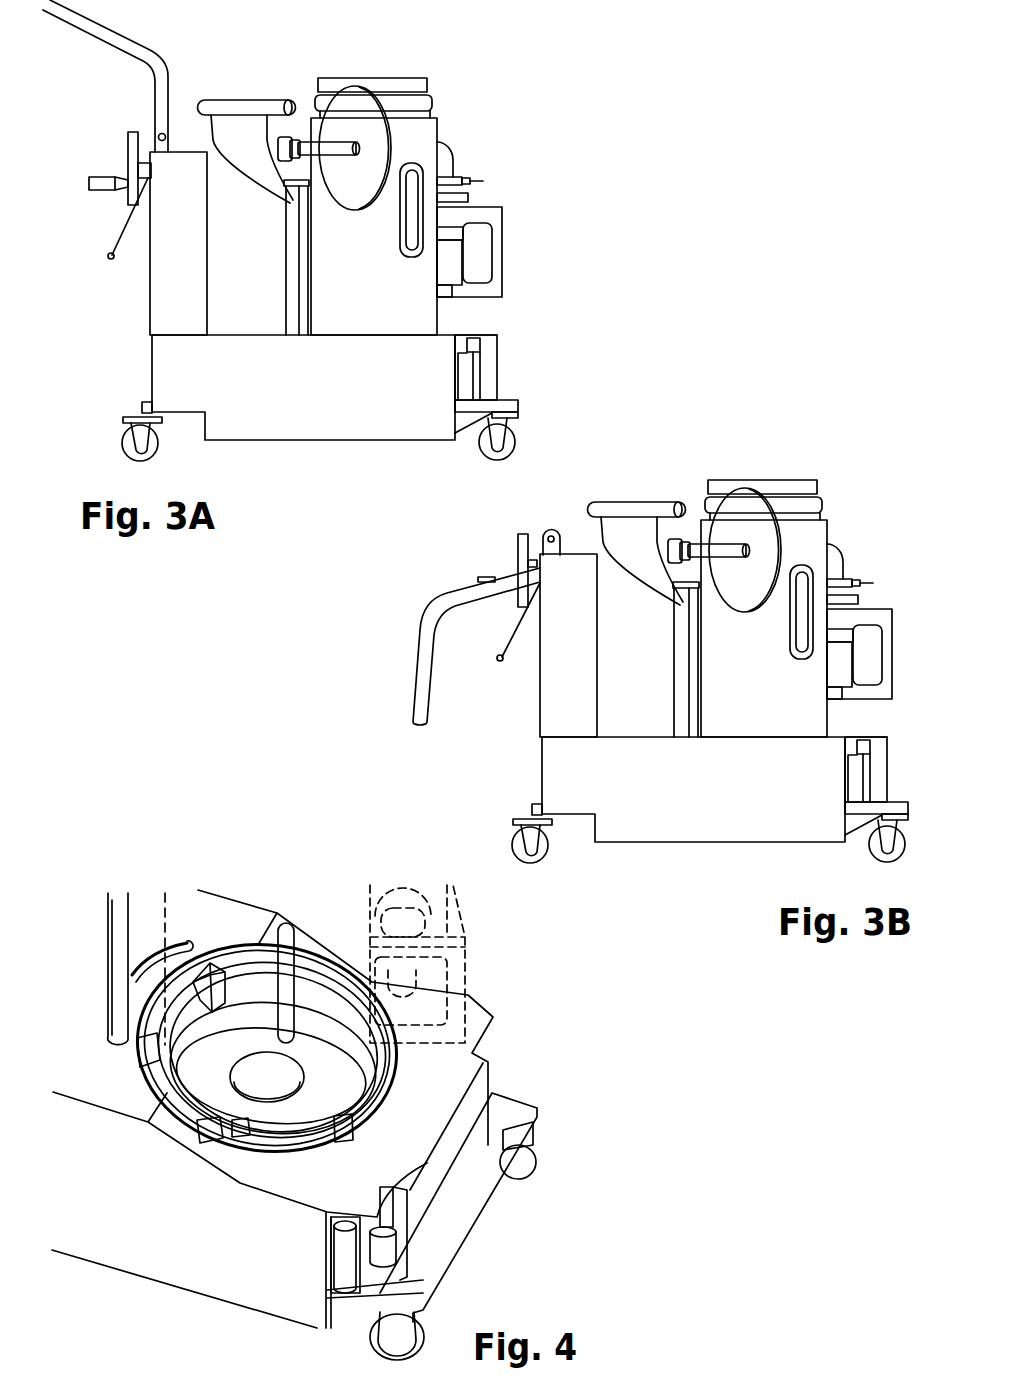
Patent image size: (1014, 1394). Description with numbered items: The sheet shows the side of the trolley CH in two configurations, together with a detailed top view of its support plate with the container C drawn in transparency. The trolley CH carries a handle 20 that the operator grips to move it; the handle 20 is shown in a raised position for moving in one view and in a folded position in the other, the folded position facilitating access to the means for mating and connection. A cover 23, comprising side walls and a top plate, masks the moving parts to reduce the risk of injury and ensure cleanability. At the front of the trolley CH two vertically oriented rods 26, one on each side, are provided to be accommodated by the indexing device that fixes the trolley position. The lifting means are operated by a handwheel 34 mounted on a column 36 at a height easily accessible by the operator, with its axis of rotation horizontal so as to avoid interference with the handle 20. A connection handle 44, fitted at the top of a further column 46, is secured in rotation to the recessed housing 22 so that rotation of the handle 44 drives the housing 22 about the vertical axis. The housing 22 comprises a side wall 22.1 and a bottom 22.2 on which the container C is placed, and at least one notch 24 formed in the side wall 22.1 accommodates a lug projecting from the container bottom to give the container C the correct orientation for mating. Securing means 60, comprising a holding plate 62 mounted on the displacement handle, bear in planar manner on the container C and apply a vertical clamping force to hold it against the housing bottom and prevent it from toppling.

In FIG. 3A, the handle 20 is at (132, 33).
In FIG. 3B, the handle 20 is at (462, 593).
In FIG. 3A, the handwheel 34 is at (118, 157).
In FIG. 3B, the handwheel 34 is at (534, 566).
In FIG. 3A, the column 36 is at (168, 267).
In FIG. 3B, the column 36 is at (541, 645).
In FIG. 3A, the connection handle 44 is at (248, 107).
In FIG. 3B, the connection handle 44 is at (637, 522).
In FIG. 3A, the column 46 is at (292, 252).
In FIG. 3B, the column 46 is at (657, 659).
In FIG. 3A, the securing means 60 is at (318, 112).
In FIG. 3B, the securing means 60 is at (705, 716).
In FIG. 3A, the holding plate 62 is at (352, 110).
In FIG. 3B, the holding plate 62 is at (749, 523).
In FIG. 3A, the container C is at (415, 147).
In FIG. 3B, the container C is at (809, 608).
In FIG. 4, the container C is at (165, 910).
In FIG. 3A, the cover 23 is at (397, 390).
In FIG. 4, the cover 23 is at (473, 1128).
In FIG. 3A, the rods 26 is at (477, 348).
In FIG. 3B, the rods 26 is at (886, 771).
In FIG. 4, the rods 26 is at (343, 1247).
In FIG. 3A, the trolley CH is at (313, 458).
In FIG. 3B, the trolley CH is at (717, 907).
In FIG. 4, the trolley CH is at (134, 1240).
In FIG. 4, the recessed housing 22 is at (346, 1072).
In FIG. 4, the side wall 22.1 is at (382, 1095).
In FIG. 4, the bottom 22.2 is at (284, 1118).
In FIG. 4, the notch 24 is at (393, 1032).